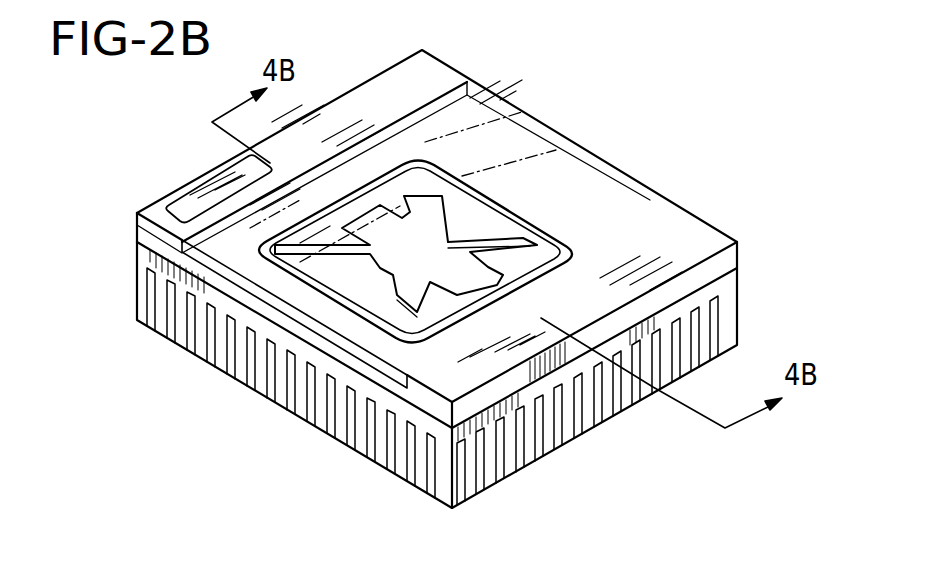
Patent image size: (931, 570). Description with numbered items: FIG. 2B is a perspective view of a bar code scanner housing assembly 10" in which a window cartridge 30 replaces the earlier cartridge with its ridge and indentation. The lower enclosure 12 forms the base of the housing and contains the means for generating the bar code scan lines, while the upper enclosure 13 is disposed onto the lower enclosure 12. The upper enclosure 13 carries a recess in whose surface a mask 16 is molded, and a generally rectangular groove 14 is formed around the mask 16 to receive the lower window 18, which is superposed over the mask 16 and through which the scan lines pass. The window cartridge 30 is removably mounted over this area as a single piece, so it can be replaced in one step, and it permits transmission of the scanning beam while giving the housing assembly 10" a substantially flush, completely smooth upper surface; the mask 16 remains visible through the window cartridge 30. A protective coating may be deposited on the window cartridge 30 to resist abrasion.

The housing assembly 10 is at (645, 122).
The lower enclosure 12 is at (138, 292).
The upper enclosure 13 is at (138, 228).
The groove 14 is at (508, 210).
The mask 16 is at (423, 242).
The lower window 18 is at (397, 294).
The window cartridge 30 is at (645, 220).